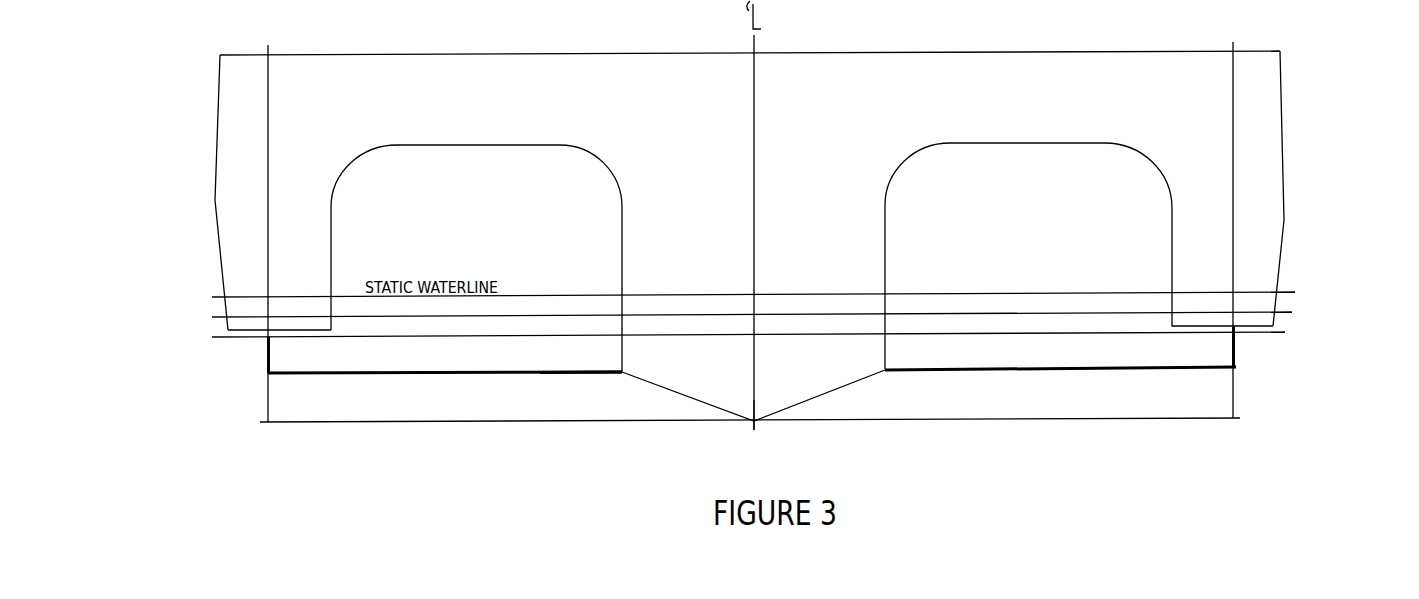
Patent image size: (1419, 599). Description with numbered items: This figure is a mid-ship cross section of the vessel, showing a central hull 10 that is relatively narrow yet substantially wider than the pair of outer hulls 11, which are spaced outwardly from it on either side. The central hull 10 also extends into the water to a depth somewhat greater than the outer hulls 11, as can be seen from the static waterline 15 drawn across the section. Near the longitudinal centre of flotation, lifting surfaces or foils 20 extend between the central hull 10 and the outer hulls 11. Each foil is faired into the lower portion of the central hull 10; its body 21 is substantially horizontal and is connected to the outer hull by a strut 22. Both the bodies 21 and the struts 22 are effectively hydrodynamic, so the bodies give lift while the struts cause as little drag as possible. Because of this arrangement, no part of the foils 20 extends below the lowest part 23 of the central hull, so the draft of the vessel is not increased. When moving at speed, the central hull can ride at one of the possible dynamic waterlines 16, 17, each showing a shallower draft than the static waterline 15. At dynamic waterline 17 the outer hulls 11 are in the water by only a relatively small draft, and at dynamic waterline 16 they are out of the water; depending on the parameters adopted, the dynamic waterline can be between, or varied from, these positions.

The central hull 10 is at (773, 394).
The outer hulls 11 is at (752, 190).
The static waterline 15 is at (753, 273).
The dynamic waterline 16 is at (785, 349).
The dynamic waterline 17 is at (803, 329).
The lifting surfaces or foils 20 is at (752, 388).
The bodies 21 is at (532, 393).
The struts 22 is at (199, 360).
The lowest part 23 is at (702, 432).